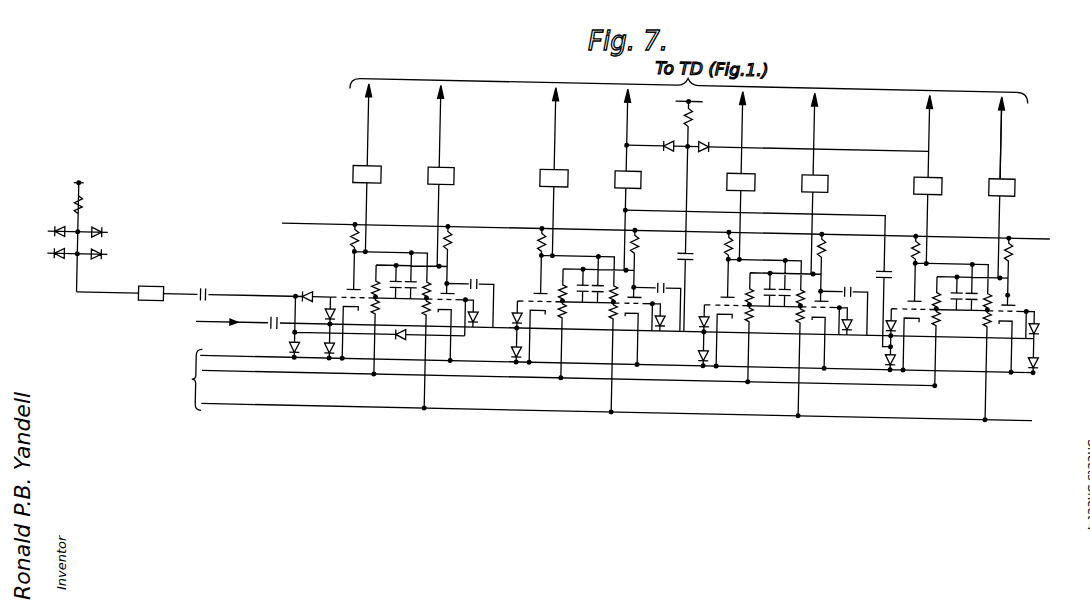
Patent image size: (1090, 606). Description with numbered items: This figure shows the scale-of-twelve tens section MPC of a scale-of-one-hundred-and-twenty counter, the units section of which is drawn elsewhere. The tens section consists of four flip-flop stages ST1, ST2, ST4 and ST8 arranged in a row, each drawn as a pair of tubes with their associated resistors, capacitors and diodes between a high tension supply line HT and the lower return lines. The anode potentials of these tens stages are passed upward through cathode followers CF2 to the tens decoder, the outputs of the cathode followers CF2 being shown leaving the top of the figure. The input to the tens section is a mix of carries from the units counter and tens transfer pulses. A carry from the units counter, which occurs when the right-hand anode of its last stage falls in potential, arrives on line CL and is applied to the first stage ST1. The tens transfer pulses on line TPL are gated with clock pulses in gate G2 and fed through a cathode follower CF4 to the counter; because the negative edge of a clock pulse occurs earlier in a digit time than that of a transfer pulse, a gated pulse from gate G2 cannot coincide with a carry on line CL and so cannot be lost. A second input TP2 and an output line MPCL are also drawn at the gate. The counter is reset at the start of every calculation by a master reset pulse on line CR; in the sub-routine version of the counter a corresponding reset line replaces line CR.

The gate G2 is at (97, 215).
The timing pulse input TP2 is at (59, 232).
The transfer pulse line TPL is at (58, 254).
The main pulse counter line (or SRCL) MPCL is at (167, 245).
The cathode follower CF4 is at (165, 290).
The carry line CL is at (220, 315).
The reset line CR is at (243, 378).
The high tension supply line HT is at (654, 218).
The first tens-section flip-flop ST1 is at (350, 219).
The second tens-section flip-flop ST2 is at (540, 216).
The third tens-section flip-flop ST4 is at (831, 203).
The fourth tens-section flip-flop ST8 is at (1012, 217).
The cathode followers CF2 is at (428, 165).
The scale-of-twelve tens section MPC is at (1040, 134).